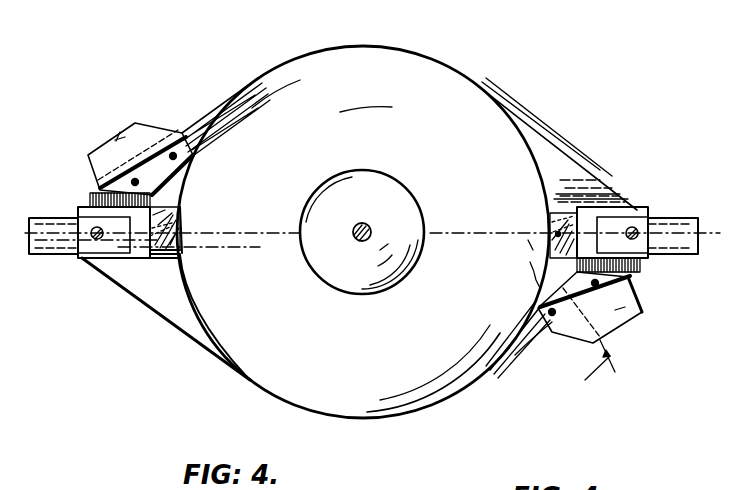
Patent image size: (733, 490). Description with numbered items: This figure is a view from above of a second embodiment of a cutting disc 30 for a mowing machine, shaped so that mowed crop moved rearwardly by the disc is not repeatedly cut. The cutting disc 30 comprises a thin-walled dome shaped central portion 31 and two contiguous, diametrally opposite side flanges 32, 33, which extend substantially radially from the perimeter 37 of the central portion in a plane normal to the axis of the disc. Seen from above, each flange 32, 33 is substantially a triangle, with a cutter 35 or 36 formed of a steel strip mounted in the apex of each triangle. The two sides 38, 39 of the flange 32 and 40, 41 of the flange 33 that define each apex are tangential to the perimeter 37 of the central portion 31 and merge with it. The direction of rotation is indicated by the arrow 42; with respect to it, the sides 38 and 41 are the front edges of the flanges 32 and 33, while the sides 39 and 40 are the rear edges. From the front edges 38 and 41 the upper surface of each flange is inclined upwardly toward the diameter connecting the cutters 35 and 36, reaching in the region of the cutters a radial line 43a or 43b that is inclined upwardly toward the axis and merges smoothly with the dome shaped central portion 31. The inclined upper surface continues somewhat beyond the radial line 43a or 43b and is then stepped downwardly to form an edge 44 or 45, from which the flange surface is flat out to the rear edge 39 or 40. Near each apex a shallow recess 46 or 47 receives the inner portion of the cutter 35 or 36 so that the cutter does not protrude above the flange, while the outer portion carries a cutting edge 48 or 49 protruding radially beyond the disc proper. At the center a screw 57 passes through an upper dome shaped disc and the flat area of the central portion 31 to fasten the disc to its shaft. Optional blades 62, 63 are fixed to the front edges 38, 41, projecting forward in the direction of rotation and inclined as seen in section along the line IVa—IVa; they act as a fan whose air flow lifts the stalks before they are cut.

The cutting disc 30 is at (264, 398).
The dome shaped central portion 31 is at (415, 372).
The side flange 32 is at (160, 328).
The side flange 33 is at (582, 346).
The cutter 35 is at (48, 242).
The cutter 36 is at (684, 223).
The perimeter 37 is at (370, 50).
The front edge 38 is at (196, 128).
The rear edge 39 is at (172, 335).
The rear edge 40 is at (578, 160).
The front edge 41 is at (524, 358).
The arrow 42 is at (415, 121).
The radial line 43a is at (186, 202).
The radial line 43b is at (558, 233).
The edge 44 is at (158, 263).
The edge 45 is at (588, 222).
The shallow recess 46 is at (138, 257).
The shallow recess 47 is at (598, 234).
The cutting edge 48 is at (44, 218).
The cutting edge 49 is at (686, 252).
The screw 57 is at (369, 226).
The blade 62 is at (127, 142).
The blade 63 is at (620, 312).
The section line IVa— IVa is at (563, 316).